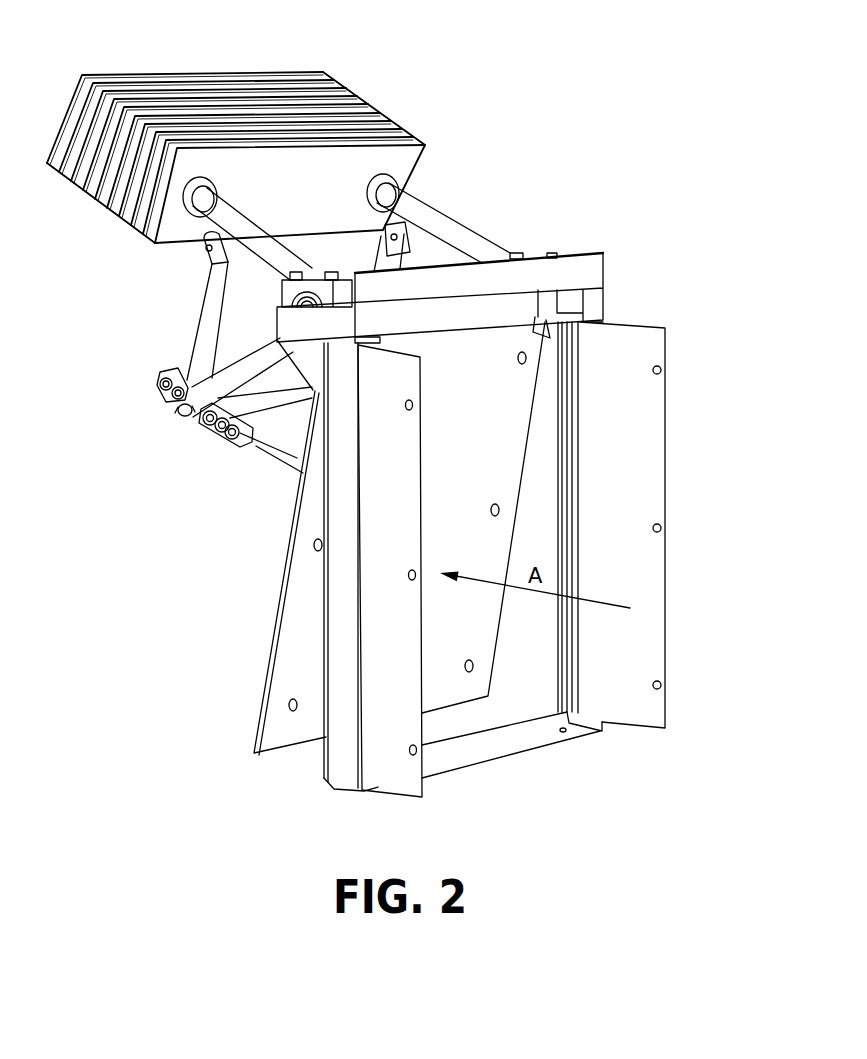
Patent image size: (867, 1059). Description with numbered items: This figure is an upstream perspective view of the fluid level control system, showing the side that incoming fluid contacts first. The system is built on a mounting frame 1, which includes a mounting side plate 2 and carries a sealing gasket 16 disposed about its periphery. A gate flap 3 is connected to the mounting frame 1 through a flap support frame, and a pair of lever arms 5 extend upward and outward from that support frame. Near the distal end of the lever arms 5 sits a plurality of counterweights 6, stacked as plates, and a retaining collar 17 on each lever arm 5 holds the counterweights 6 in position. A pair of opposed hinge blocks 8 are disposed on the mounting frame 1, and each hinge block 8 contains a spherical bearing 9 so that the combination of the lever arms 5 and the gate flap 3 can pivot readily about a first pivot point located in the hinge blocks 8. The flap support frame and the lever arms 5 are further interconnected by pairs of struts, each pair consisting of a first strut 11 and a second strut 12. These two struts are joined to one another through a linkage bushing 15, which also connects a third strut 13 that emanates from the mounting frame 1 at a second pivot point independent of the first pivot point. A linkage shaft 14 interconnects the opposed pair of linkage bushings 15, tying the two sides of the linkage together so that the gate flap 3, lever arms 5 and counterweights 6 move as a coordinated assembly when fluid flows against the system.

The mounting frame 1 is at (342, 760).
The mounting side plate 2 is at (390, 773).
The gate flap 3 is at (257, 720).
The lever arms 5 is at (250, 224).
The counterweights 6 is at (340, 97).
The hinge blocks 8 is at (560, 300).
The spherical bearing 9 is at (312, 278).
The first strut 11 is at (207, 313).
The second strut 12 is at (282, 466).
The third strut 13 is at (233, 371).
The linkage shaft 14 is at (237, 447).
The linkage bushing 15 is at (205, 249).
The sealing gasket 16 is at (557, 655).
The retaining collar 17 is at (205, 183).